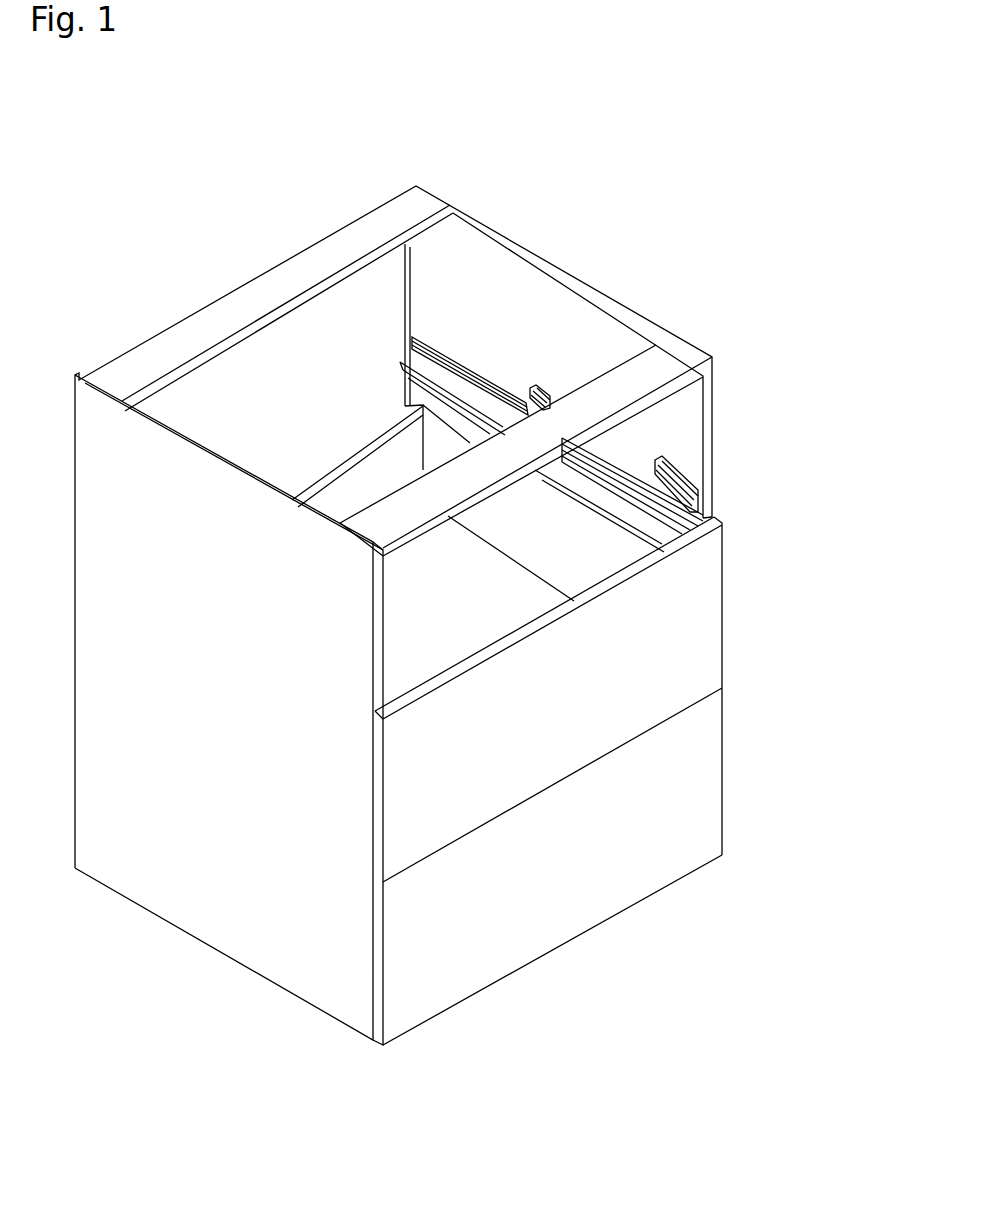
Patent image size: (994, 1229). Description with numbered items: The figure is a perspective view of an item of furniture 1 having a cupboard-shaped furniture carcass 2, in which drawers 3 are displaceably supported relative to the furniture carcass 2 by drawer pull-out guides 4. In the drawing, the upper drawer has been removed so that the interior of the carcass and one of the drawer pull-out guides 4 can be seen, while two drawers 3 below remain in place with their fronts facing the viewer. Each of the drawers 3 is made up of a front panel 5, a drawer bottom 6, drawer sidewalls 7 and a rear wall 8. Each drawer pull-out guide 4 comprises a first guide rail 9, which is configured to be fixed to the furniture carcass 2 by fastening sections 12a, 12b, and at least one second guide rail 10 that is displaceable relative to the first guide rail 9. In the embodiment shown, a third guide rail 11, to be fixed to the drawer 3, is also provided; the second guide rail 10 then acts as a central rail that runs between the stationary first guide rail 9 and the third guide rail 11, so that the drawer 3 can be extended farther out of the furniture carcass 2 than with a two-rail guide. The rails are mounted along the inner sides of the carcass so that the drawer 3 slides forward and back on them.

The item of furniture 1 is at (150, 977).
The furniture carcass 2 is at (145, 887).
The drawer 3 is at (745, 611).
The drawer pull-out guide 4 is at (507, 360).
The front panel 5 is at (562, 712).
The drawer bottom 6 is at (444, 617).
The drawer sidewall 7 is at (443, 339).
The rear wall 8 is at (333, 453).
The first guide rail 9 is at (462, 392).
The second guide rail 10 is at (714, 514).
The third guide rail 11 is at (630, 447).
The fastening section 12a is at (534, 390).
The fastening section 12b is at (680, 465).